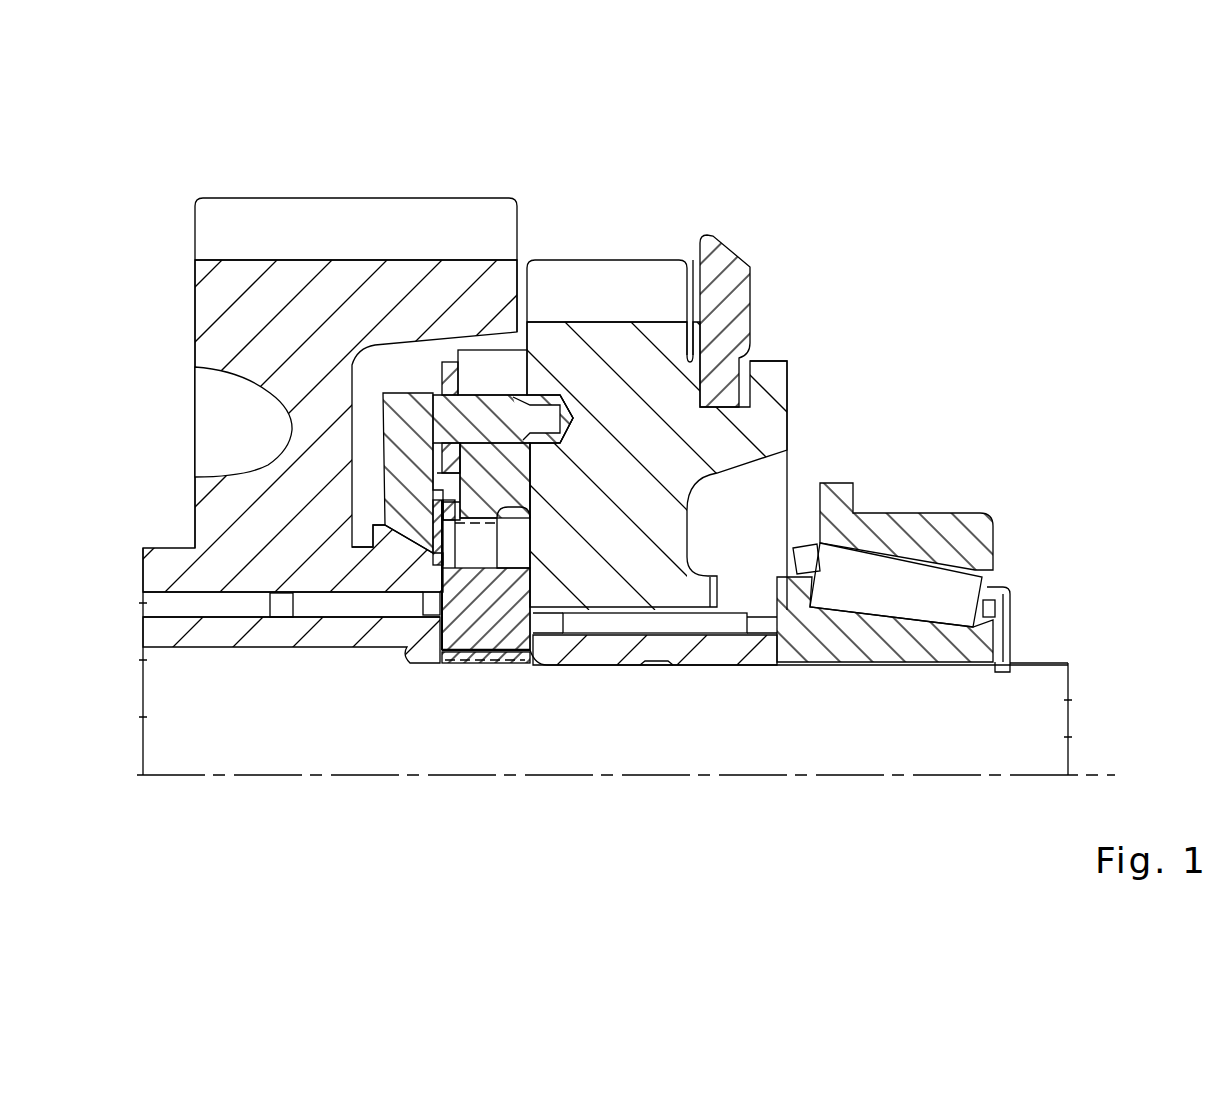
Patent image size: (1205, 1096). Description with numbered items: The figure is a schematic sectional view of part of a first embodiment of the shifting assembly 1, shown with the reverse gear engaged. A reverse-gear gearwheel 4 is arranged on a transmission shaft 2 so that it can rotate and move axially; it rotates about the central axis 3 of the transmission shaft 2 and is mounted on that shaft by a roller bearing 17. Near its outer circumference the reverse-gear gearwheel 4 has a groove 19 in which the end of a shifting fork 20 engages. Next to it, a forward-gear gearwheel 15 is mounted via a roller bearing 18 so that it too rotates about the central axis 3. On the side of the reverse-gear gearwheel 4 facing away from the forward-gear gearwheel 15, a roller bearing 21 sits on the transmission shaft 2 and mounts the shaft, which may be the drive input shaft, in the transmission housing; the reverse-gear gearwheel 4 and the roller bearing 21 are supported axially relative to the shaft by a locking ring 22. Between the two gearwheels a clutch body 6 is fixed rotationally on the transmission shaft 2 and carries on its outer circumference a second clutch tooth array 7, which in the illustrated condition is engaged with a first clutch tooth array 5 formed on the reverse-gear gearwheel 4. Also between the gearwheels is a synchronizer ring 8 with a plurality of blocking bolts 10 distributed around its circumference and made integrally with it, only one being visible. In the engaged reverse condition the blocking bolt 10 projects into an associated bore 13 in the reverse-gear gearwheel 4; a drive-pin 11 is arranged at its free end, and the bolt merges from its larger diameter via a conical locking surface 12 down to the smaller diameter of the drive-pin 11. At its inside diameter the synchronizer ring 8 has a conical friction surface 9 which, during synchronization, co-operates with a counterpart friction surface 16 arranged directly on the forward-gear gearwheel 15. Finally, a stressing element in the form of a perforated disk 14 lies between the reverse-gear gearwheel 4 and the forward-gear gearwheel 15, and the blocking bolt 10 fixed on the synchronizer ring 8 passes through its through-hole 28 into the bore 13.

The shifting assembly 1 is at (1003, 237).
The transmission shaft 2 is at (1022, 680).
The central axis 3 is at (1010, 755).
The reverse-gear gearwheel 4 is at (770, 437).
The first clutch tooth array 5 is at (455, 548).
The clutch body 6 is at (518, 633).
The second clutch tooth array 7 is at (520, 570).
The synchronizer ring 8 is at (405, 547).
The conical friction surface 9 is at (413, 548).
The blocking bolt 10 is at (478, 430).
The drive-pin 11 is at (545, 372).
The conical locking surface 12 is at (547, 418).
The bore 13 is at (543, 443).
The perforated disk 14 is at (453, 375).
The forward-gear gearwheel 15 is at (236, 273).
The counterpart friction surface 16 is at (360, 583).
The roller bearing 17 is at (683, 627).
The roller bearing 18 is at (210, 603).
The groove 19 is at (790, 380).
The shifting fork 20 is at (723, 292).
The roller bearing 21 is at (853, 588).
The locking ring 22 is at (1000, 660).
The through-hole 28 is at (452, 450).